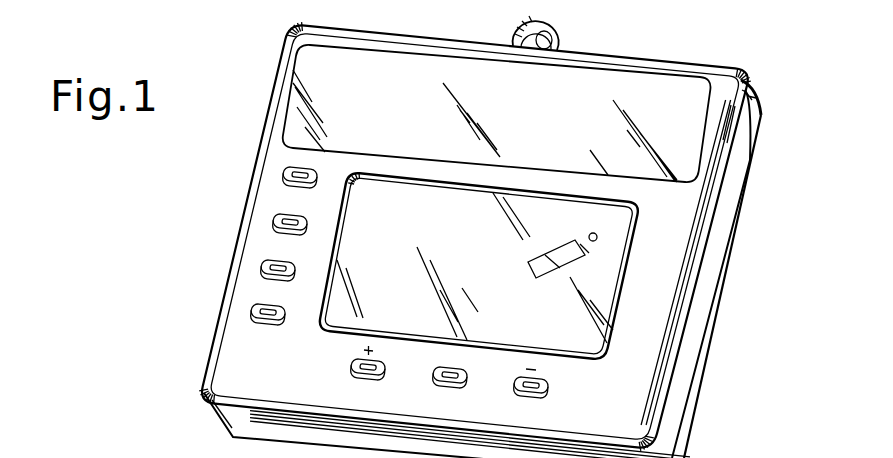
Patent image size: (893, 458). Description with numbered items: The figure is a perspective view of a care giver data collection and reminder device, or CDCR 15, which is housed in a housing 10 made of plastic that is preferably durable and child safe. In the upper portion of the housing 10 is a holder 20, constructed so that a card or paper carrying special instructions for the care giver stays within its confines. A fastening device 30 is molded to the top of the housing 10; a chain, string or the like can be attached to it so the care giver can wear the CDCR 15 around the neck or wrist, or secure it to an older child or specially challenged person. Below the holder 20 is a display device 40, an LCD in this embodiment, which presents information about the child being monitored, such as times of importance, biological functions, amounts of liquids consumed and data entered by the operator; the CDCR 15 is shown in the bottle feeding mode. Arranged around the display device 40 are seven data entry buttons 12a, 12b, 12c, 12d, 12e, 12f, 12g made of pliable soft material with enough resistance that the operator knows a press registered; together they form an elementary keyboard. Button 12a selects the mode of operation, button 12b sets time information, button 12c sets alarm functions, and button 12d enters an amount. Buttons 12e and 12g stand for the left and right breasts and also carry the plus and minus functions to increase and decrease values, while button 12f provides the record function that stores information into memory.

The housing 10 is at (733, 198).
The mode selection button 12a is at (283, 172).
The time button 12b is at (273, 222).
The alarm button 12c is at (260, 268).
The amount button 12d is at (250, 312).
The left button 12e is at (350, 368).
The record button 12f is at (432, 373).
The right button 12g is at (551, 387).
The care giver data collection and reminder device 15 is at (704, 385).
The holder 20 is at (663, 95).
The fastening device 30 is at (552, 30).
The display device 40 is at (602, 345).